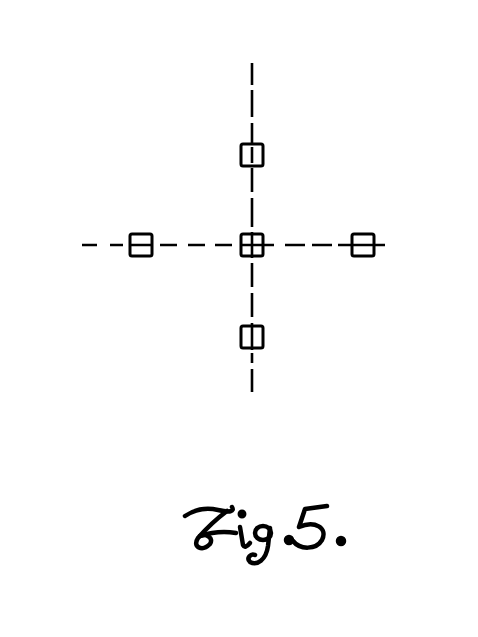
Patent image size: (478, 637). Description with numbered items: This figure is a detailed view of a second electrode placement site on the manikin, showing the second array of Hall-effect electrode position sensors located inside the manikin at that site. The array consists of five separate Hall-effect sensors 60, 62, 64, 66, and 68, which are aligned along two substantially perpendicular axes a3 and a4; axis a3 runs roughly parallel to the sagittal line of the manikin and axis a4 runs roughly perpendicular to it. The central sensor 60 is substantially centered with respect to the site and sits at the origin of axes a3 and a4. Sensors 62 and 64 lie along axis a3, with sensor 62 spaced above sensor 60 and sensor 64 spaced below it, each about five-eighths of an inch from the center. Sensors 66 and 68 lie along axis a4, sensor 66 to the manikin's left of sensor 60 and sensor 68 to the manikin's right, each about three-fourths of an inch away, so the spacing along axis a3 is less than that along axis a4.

The Hall-effect sensor 60 is at (256, 258).
The Hall-effect sensor 62 is at (264, 156).
The Hall-effect sensor 64 is at (265, 337).
The Hall-effect sensor 66 is at (363, 232).
The Hall-effect sensor 68 is at (148, 256).
The axis a3 is at (252, 102).
The axis a4 is at (395, 244).